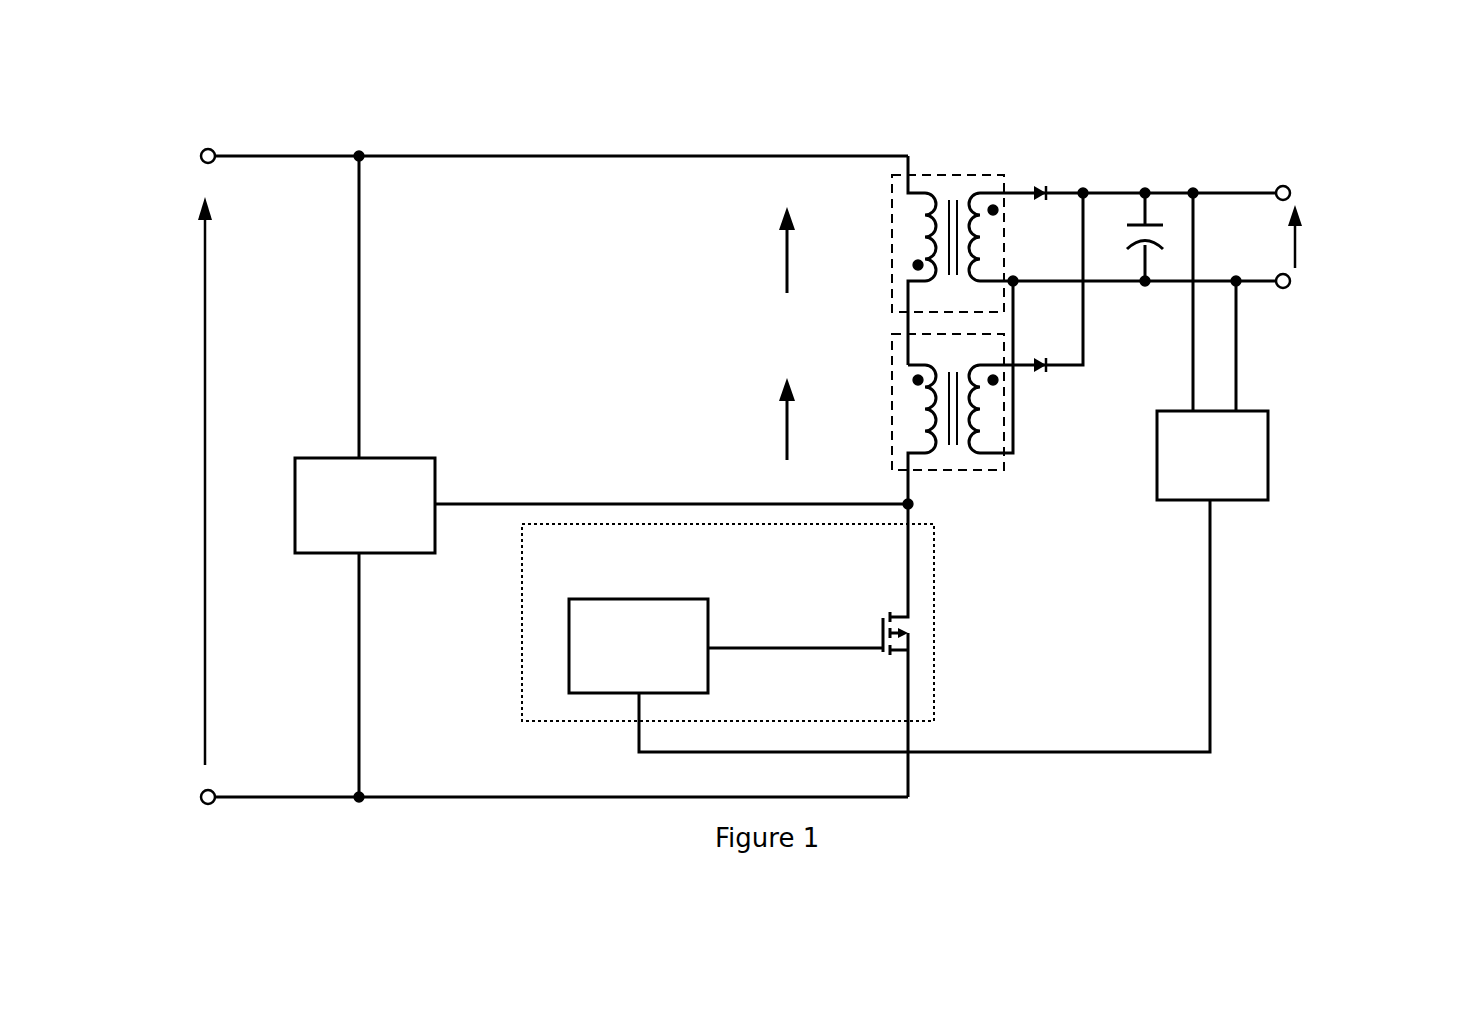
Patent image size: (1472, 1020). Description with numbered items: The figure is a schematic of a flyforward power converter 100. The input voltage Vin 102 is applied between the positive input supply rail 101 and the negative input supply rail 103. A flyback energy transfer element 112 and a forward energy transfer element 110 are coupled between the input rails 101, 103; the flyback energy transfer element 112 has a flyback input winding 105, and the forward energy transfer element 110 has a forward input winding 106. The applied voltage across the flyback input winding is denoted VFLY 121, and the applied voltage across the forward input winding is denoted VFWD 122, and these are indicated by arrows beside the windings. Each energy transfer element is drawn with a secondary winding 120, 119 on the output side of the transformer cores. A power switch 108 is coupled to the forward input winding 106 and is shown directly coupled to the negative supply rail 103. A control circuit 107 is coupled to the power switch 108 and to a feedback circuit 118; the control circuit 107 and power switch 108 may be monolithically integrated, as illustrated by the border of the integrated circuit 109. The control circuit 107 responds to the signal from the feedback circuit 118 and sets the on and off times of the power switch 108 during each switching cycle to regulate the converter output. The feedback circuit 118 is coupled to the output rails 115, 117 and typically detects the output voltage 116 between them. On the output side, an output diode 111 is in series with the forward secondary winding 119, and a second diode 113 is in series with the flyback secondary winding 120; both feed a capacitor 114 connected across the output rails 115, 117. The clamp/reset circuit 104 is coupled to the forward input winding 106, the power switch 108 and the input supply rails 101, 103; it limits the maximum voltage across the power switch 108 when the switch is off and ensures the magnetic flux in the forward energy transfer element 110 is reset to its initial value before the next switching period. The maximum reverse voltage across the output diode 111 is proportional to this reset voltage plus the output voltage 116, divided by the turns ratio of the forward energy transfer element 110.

The flyforward power converter 100 is at (725, 448).
The positive input supply rail 101 is at (225, 175).
The input voltage Vin 102 is at (165, 462).
The negative input supply rail 103 is at (197, 797).
The clamp/reset circuit 104 is at (318, 455).
The flyback input winding 105 is at (912, 232).
The forward input winding 106 is at (912, 412).
The control circuit 107 is at (565, 680).
The power switch 108 is at (913, 652).
The integrated circuit 109 is at (935, 555).
The forward energy transfer element 110 is at (1000, 478).
The output diode 111 is at (1040, 380).
The flyback energy transfer element 112 is at (975, 170).
The flyback diode 113 is at (1045, 190).
The output capacitor 114 is at (1152, 230).
The output rail 115 is at (1295, 185).
The output voltage 116 is at (1375, 232).
The output rail 117 is at (1300, 288).
The feedback circuit 118 is at (1240, 512).
The second transformer secondary winding 119 is at (1000, 420).
The first transformer secondary winding 120 is at (992, 205).
The VFLY 121 is at (730, 250).
The VFWD 122 is at (730, 420).